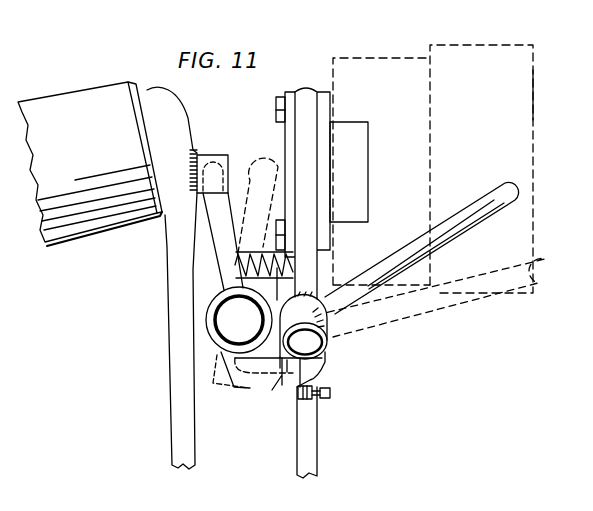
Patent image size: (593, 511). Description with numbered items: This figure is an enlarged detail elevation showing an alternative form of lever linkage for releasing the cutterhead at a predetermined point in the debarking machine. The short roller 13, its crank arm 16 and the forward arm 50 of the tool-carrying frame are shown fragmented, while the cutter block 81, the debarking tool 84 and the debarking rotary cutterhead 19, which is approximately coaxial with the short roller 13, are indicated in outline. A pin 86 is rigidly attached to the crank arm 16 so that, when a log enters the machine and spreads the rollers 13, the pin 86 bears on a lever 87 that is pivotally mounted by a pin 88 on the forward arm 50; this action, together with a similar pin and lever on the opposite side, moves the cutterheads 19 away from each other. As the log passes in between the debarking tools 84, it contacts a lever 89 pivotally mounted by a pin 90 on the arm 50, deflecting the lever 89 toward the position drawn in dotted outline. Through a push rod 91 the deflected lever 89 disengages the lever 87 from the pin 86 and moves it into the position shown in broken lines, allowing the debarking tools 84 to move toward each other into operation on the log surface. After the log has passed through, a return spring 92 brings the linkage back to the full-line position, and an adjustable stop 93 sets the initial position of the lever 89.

The short roller 13 is at (75, 90).
The crank arm 16 is at (168, 365).
The debarking rotary cutterhead 19 is at (503, 41).
The forward arm 50 is at (318, 452).
The cutter block 81 is at (392, 55).
The debarking tool 84 is at (517, 97).
The pin 86 is at (216, 155).
The lever 87 is at (213, 247).
The pin 88 is at (212, 322).
The lever 89 is at (503, 217).
The pin 90 is at (328, 350).
The push rod 91 is at (280, 380).
The return spring 92 is at (250, 283).
The adjustable stop 93 is at (330, 395).